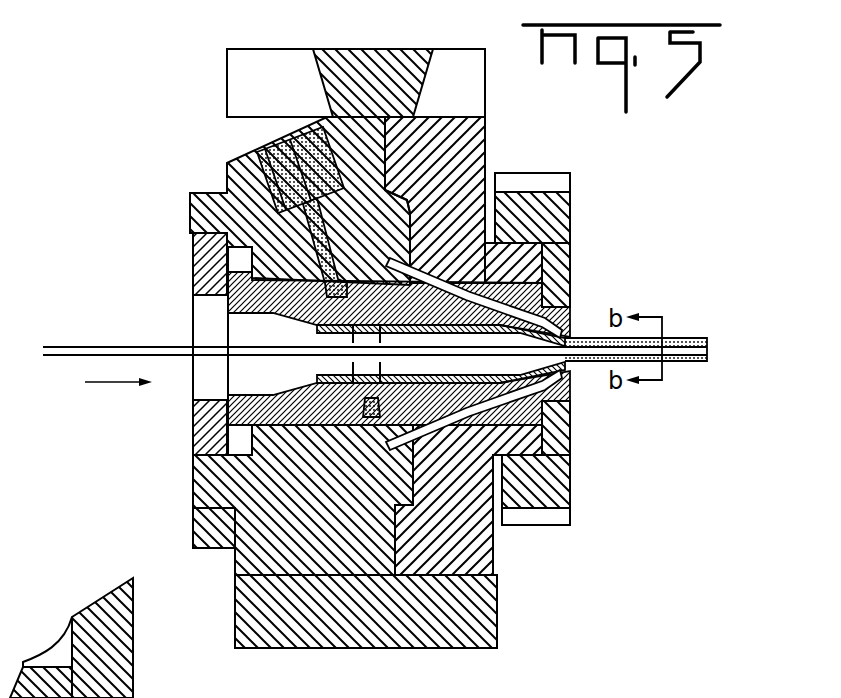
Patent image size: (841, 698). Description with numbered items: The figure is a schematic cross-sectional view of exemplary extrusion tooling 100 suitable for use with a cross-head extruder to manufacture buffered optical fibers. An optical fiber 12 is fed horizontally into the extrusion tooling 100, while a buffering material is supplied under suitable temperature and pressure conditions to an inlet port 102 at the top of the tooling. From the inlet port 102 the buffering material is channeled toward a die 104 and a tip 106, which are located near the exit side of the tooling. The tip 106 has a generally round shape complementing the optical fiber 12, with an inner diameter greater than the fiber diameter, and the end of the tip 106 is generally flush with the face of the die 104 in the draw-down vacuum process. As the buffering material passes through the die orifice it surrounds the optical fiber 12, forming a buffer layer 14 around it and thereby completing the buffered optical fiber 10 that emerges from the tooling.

The extrusion tooling 100 is at (176, 91).
The inlet port 102 is at (300, 133).
The die 104 is at (572, 320).
The tip 106 is at (573, 417).
The buffered optical fiber 10 is at (691, 326).
The optical fiber 12 is at (130, 348).
The buffer layer 14 is at (700, 363).